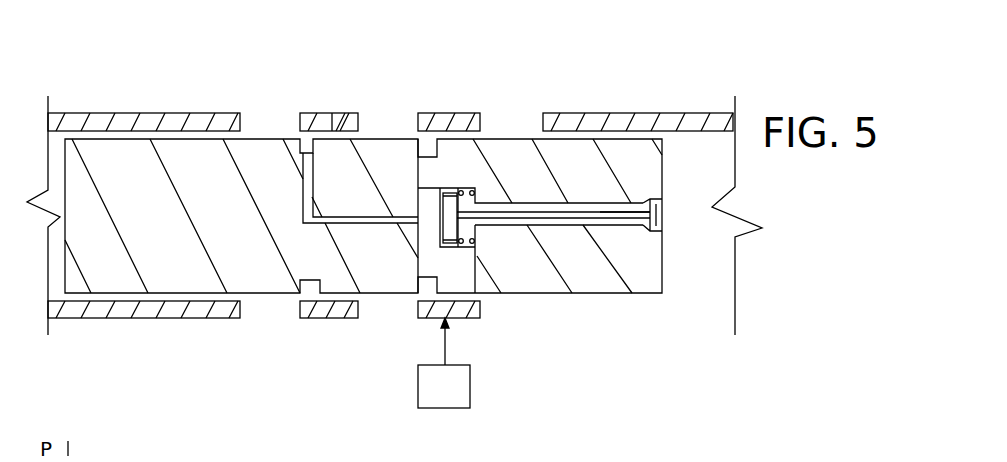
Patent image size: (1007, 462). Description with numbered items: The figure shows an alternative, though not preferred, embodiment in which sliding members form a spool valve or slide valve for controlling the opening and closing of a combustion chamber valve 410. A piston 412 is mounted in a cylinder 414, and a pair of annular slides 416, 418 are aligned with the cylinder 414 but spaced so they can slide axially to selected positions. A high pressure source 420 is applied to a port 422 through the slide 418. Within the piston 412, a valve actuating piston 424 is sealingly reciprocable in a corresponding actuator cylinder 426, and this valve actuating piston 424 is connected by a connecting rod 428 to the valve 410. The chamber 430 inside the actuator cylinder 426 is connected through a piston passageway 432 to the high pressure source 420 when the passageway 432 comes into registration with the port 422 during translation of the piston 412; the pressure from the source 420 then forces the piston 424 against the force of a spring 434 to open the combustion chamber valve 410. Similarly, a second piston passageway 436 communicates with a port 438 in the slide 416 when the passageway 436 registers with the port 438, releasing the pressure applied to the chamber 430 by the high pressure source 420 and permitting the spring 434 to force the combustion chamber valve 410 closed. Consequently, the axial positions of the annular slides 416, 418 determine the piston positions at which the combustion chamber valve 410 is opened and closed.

The combustion chamber valve 410 is at (660, 243).
The piston 412 is at (172, 268).
The cylinder 414 is at (582, 122).
The annular slide 416 is at (312, 120).
The annular slide 418 is at (440, 120).
The high pressure source 420 is at (457, 399).
The port 422 is at (443, 316).
The valve actuating piston 424 is at (450, 190).
The actuator cylinder 426 is at (437, 188).
The connecting rod 428 is at (617, 212).
The chamber 430 is at (432, 228).
The piston passageway 432 is at (422, 263).
The spring 434 is at (452, 203).
The piston passageway 436 is at (362, 220).
The port 438 is at (332, 120).